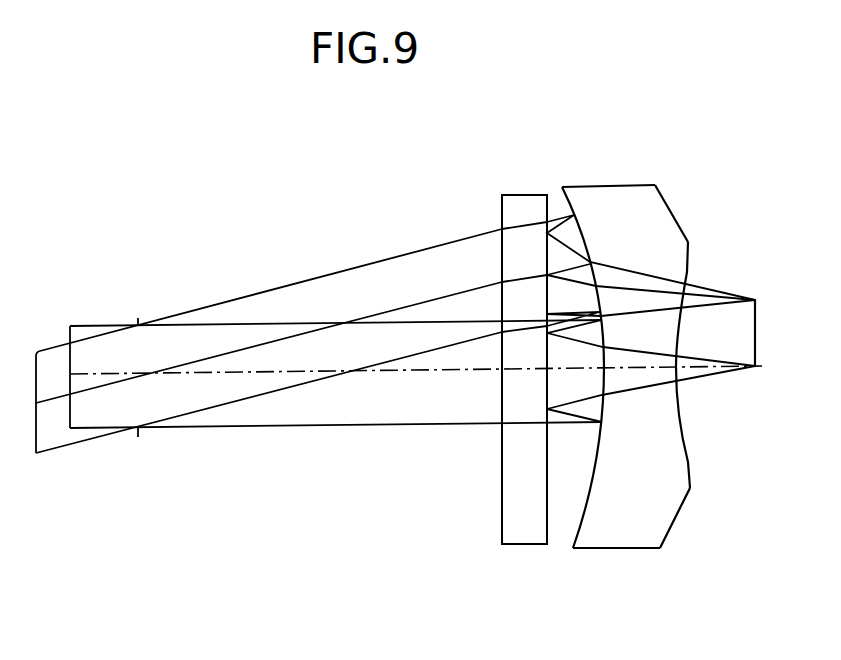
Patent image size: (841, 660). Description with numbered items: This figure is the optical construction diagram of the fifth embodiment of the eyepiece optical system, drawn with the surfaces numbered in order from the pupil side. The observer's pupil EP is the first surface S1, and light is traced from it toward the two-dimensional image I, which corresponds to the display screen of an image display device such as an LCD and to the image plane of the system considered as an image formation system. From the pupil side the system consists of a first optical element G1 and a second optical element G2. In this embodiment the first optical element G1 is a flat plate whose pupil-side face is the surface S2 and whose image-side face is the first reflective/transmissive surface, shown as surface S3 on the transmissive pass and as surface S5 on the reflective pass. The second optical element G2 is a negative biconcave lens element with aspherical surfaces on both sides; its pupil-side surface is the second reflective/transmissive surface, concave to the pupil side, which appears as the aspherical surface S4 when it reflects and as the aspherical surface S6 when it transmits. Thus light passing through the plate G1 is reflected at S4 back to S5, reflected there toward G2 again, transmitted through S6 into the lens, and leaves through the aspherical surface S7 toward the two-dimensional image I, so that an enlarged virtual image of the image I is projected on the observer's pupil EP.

The first surface (pupil surface) S1 is at (150, 340).
The pupil EP is at (138, 319).
The first optical element G1 is at (523, 194).
The second surface S2 is at (502, 526).
The third surface (first reflective/transmissive surface, transmissive pass) S3 is at (596, 409).
The fifth surface (first reflective/transmissive surface, reflective pass) S5 is at (547, 530).
The second optical element G2 is at (605, 186).
The fourth surface (second reflective/transmissive surface, reflective pass) S4 is at (648, 388).
The sixth surface (second reflective/transmissive surface, transmissive pass) S6 is at (578, 531).
The seventh surface S7 is at (683, 413).
The two-dimensional image I is at (760, 303).